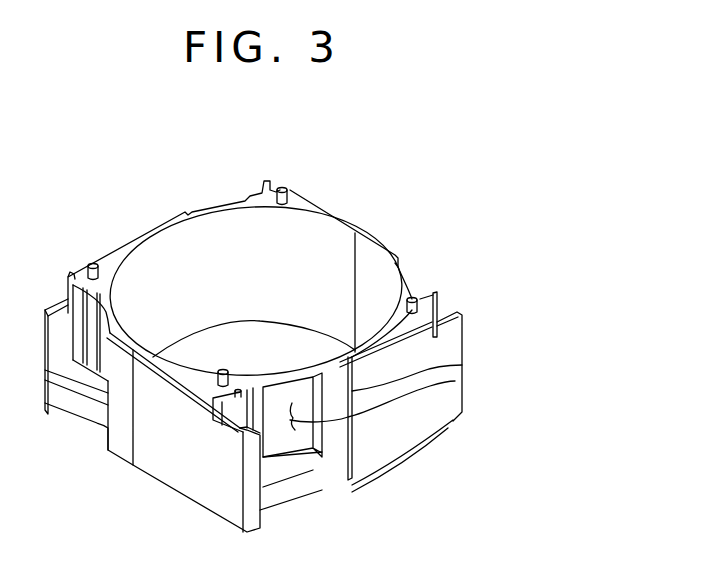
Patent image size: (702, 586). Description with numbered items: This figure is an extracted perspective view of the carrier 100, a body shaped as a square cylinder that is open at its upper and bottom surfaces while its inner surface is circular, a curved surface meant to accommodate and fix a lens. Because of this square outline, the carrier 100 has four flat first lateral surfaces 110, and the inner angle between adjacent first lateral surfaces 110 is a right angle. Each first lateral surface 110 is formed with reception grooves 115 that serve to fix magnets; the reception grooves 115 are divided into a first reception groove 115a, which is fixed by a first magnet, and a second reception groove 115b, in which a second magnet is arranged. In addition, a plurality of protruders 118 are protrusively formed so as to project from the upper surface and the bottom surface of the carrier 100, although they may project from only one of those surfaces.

The carrier 100 is at (390, 173).
The first lateral surface 110 is at (192, 462).
The reception groove 115 is at (581, 370).
The first reception groove 115a is at (453, 421).
The second reception groove 115b is at (440, 367).
The protruder 118 is at (413, 296).